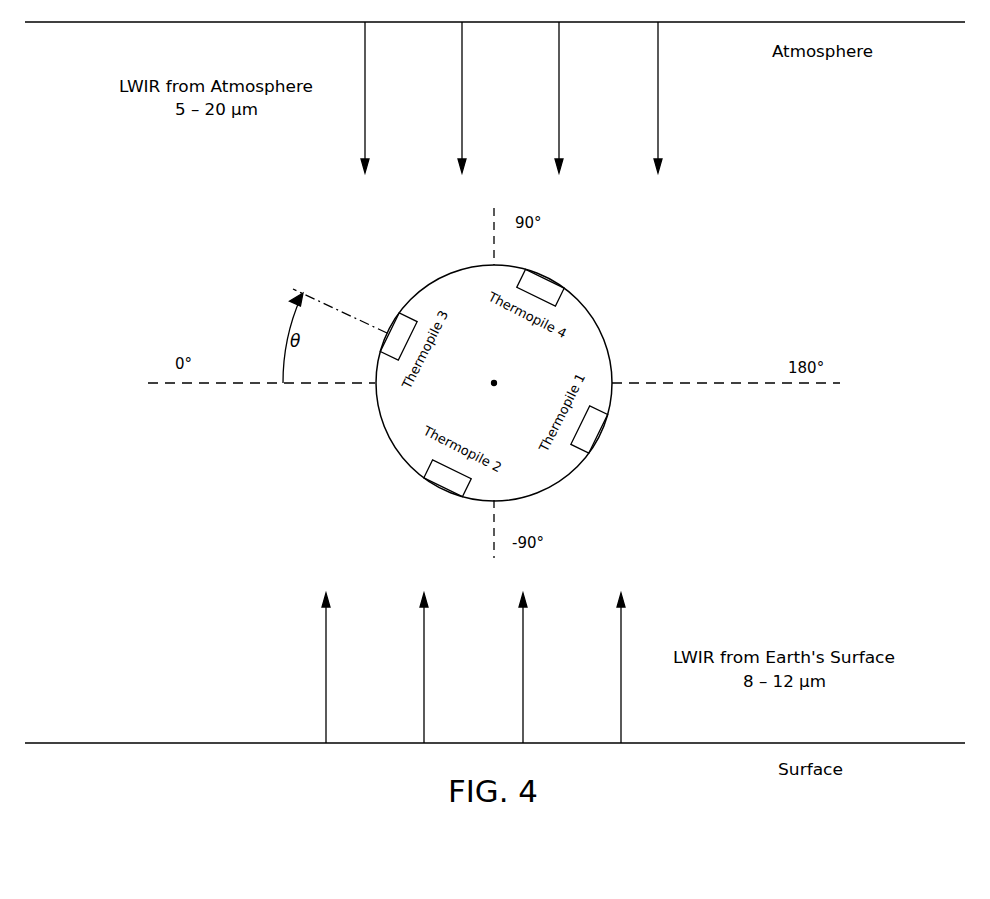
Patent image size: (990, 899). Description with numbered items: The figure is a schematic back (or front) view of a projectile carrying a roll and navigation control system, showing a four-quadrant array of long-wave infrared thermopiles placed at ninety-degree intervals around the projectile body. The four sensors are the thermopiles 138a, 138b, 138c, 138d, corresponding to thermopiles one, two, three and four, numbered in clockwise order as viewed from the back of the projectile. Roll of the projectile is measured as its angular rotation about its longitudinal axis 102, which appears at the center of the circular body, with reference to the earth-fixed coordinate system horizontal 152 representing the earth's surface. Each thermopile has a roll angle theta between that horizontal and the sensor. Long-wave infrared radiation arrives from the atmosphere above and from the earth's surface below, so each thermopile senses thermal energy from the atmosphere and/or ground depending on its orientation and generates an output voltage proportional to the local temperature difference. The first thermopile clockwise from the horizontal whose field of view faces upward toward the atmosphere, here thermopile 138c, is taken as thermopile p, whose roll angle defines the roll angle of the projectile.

The longitudinal axis 102 is at (492, 384).
The earth-fixed coordinate system horizontal 152 is at (218, 384).
The thermopile 138a is at (603, 432).
The thermopile 138b is at (432, 483).
The thermopile 138c is at (395, 322).
The thermopile 138d is at (556, 286).